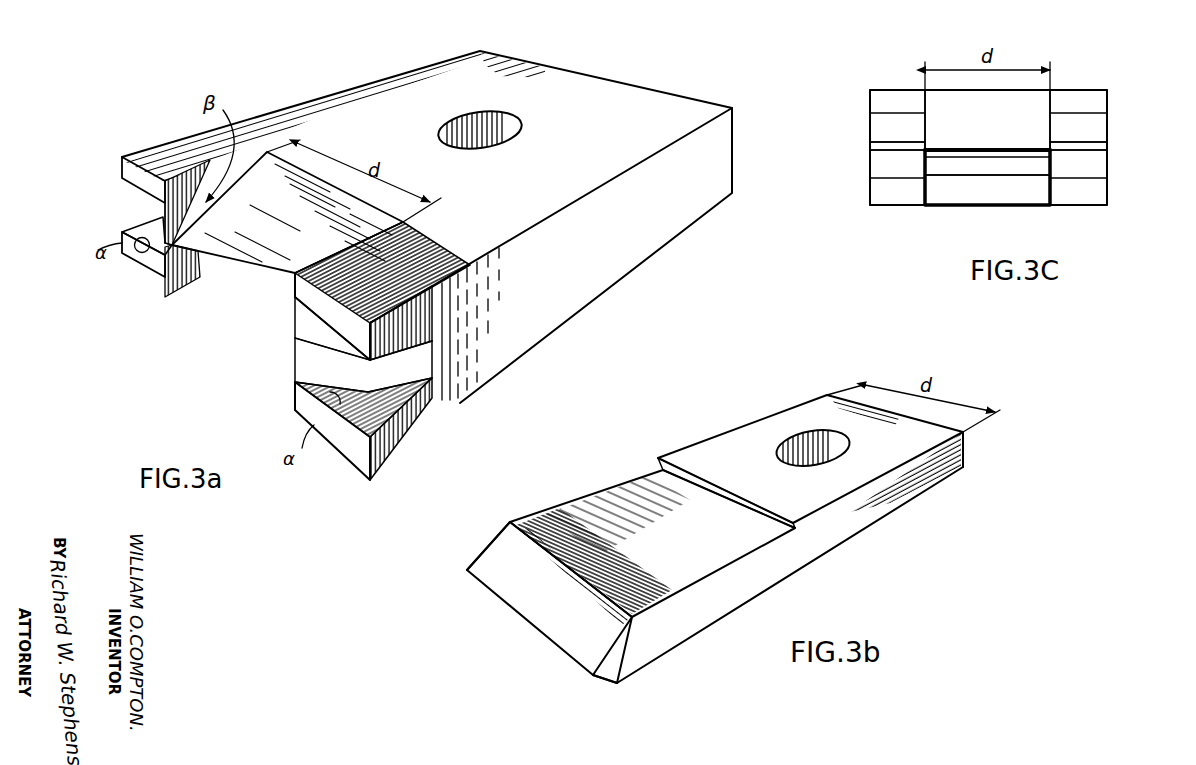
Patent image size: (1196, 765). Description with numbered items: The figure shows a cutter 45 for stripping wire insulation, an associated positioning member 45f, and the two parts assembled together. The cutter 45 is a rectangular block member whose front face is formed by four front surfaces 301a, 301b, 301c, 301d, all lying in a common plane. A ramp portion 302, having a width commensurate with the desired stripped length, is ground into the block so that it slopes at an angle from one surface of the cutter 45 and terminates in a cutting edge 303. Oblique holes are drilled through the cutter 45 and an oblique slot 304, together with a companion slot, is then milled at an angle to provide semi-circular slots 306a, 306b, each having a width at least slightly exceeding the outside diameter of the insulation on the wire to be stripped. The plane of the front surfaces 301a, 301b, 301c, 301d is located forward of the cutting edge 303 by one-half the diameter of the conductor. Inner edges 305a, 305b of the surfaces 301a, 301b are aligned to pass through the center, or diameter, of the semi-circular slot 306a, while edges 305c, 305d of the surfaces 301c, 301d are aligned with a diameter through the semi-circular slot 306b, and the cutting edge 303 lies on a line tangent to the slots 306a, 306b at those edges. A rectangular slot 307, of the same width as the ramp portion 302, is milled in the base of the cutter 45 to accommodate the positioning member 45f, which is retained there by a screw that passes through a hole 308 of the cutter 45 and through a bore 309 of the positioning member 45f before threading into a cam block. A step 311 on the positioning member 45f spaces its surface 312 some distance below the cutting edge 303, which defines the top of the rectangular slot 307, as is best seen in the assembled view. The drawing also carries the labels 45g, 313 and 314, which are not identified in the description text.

In FIG. 3a, the cutter 45 is at (537, 195).
In FIG. 3b, the positioning member 45f is at (603, 495).
In FIG. 3b, the bevelled clamping face 45g is at (549, 598).
In FIG. 3c, the bevelled clamping face 45g is at (987, 177).
In FIG. 3a, the front surface 301a is at (121, 161).
In FIG. 3c, the front surface 301a is at (885, 100).
In FIG. 3a, the front surface 301b is at (121, 262).
In FIG. 3c, the front surface 301b is at (885, 195).
In FIG. 3a, the front surface 301c is at (294, 356).
In FIG. 3c, the front surface 301c is at (1097, 105).
In FIG. 3a, the front surface 301d is at (368, 462).
In FIG. 3a, the ramp portion 302 is at (321, 256).
In FIG. 3c, the ramp portion 302 is at (980, 118).
In FIG. 3a, the cutting edge 303 is at (289, 304).
In FIG. 3c, the cutting edge 303 is at (990, 148).
In FIG. 3a, the oblique slot 304 is at (153, 212).
In FIG. 3a, the inner edge 305a is at (150, 192).
In FIG. 3a, the inner edge 305b is at (164, 291).
In FIG. 3a, the edge 305c is at (293, 300).
In FIG. 3a, the edge 305d is at (294, 395).
In FIG. 3a, the semi-circular slot 306a is at (140, 231).
In FIG. 3c, the semi-circular slot 306a is at (885, 148).
In FIG. 3a, the semi-circular slot 306b is at (434, 345).
In FIG. 3c, the semi-circular slot 306b is at (1097, 147).
In FIG. 3a, the rectangular slot 307 is at (293, 352).
In FIG. 3a, the hole 308 is at (518, 124).
In FIG. 3b, the bore 309 is at (838, 447).
In FIG. 3b, the step 311 is at (663, 467).
In FIG. 3b, the surface 312 is at (663, 536).
In FIG. 3c, the surface 312 is at (1030, 160).
In FIG. 3b, the edge 313 is at (508, 602).
In FIG. 3c, the edge 313 is at (963, 177).
In FIG. 3b, the bottom edge 314 is at (607, 685).
In FIG. 3c, the bottom edge 314 is at (973, 207).